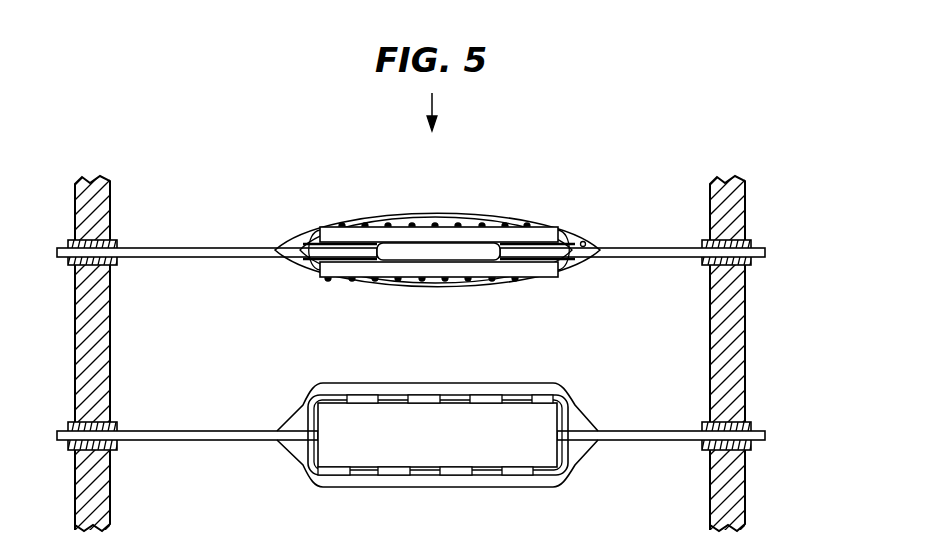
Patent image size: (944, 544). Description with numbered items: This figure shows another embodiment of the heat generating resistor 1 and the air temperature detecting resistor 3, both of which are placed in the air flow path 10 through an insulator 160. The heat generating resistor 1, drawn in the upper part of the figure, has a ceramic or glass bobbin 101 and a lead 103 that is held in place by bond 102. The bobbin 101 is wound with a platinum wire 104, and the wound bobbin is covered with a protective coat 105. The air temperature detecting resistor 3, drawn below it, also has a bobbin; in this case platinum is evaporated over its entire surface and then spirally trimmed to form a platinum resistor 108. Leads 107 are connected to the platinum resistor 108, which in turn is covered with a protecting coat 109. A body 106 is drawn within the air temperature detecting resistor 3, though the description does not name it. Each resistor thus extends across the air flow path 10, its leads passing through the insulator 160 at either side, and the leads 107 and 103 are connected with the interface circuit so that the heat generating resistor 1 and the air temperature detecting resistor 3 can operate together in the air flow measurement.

The air flow path 10 is at (108, 182).
The insulator 160 is at (113, 241).
The lead 103 is at (193, 246).
The heat generating resistor 1 is at (325, 225).
The bond 102 is at (348, 240).
The bobbin 101 is at (420, 235).
The platinum wire 104 is at (457, 222).
The protective coat 105 is at (455, 277).
The leads 107 is at (267, 442).
The air temperature detecting resistor 3 is at (328, 420).
The component body 106 is at (427, 457).
The platinum resistor 108 is at (367, 395).
The protecting coat 109 is at (517, 395).